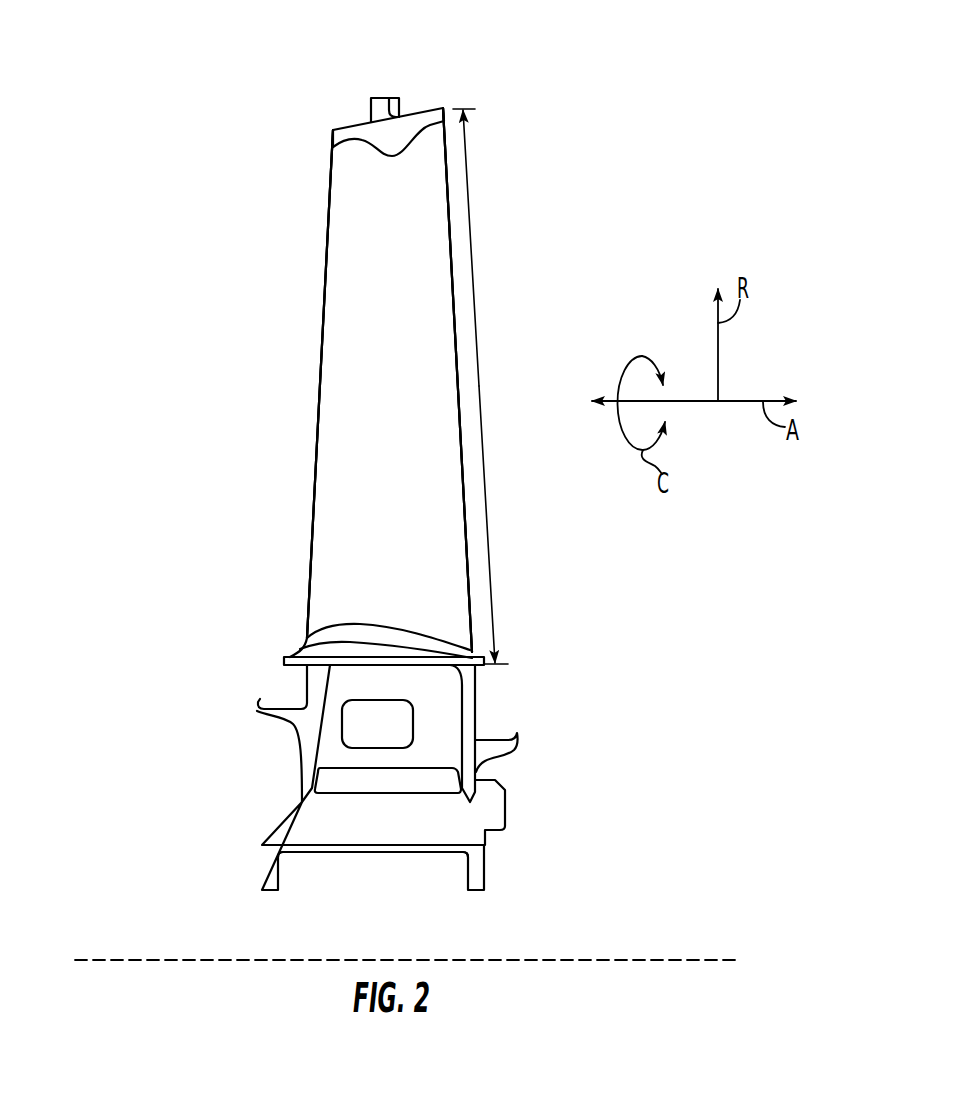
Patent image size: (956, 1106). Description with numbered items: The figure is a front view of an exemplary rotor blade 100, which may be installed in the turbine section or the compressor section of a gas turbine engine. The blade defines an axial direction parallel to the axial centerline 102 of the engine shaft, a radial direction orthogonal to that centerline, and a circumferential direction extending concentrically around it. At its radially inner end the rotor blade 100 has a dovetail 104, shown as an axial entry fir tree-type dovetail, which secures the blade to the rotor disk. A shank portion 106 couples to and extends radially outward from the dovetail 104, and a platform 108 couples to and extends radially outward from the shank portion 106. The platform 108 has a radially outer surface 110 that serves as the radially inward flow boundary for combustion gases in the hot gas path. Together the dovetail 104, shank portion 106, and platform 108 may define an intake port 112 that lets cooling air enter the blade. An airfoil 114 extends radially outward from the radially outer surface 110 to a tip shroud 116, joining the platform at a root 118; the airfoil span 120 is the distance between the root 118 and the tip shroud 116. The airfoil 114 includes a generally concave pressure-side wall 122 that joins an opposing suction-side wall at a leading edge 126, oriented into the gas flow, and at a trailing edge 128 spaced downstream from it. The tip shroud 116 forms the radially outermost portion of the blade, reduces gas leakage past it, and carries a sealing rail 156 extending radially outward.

The rotor blade 100 is at (170, 91).
The axial centerline 102 is at (607, 962).
The dovetail 104 is at (262, 862).
The shank portion 106 is at (470, 716).
The platform 108 is at (270, 655).
The radially outer surface 110 is at (293, 653).
The intake port 112 is at (371, 864).
The airfoil 114 is at (294, 298).
The tip shroud 116 is at (434, 109).
The root 118 is at (418, 641).
The airfoil span 120 is at (476, 280).
The pressure-side wall 122 is at (407, 369).
The leading edge 126 is at (318, 417).
The trailing edge 128 is at (447, 202).
The sealing rail 156 is at (374, 97).